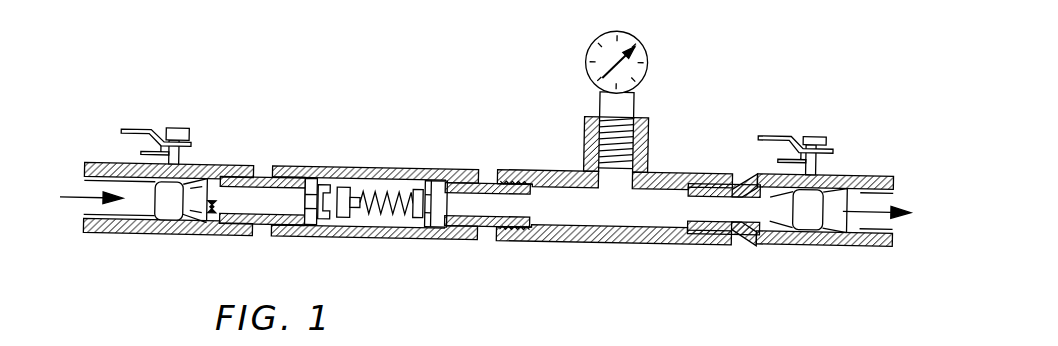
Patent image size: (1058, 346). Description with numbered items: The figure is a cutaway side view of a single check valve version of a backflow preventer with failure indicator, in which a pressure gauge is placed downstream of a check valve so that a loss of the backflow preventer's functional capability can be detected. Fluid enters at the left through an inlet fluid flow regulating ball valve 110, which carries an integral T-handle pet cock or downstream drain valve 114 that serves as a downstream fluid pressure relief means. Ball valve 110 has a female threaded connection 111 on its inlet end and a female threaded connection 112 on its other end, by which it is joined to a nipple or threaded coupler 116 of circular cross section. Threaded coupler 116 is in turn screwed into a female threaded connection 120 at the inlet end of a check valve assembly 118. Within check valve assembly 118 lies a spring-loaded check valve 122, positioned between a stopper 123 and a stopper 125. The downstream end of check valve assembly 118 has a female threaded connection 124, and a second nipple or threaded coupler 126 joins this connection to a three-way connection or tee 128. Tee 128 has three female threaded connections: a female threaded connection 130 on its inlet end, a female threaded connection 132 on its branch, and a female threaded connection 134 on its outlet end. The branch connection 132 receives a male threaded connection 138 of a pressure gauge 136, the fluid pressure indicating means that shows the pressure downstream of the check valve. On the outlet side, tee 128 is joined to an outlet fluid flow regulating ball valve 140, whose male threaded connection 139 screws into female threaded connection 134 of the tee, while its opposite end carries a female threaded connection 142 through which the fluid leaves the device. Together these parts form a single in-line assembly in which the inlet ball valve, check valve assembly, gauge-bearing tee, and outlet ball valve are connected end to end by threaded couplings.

The ball valve 110 is at (157, 235).
The female threaded connection 111 is at (102, 163).
The female threaded connection 112 is at (229, 175).
The downstream drain valve 114 is at (210, 208).
The threaded coupler 116 is at (283, 195).
The check valve assembly 118 is at (355, 166).
The female threaded connection 120 is at (278, 175).
The spring-loaded check valve 122 is at (351, 222).
The stopper 123 is at (327, 180).
The female threaded connection 124 is at (477, 170).
The stopper 125 is at (436, 176).
The threaded coupler 126 is at (437, 225).
The tee 128 is at (614, 234).
The female threaded connection 130 is at (519, 238).
The female threaded connection 132 is at (584, 145).
The female threaded connection 134 is at (711, 183).
The pressure gauge 136 is at (648, 60).
The male threaded connection 138 is at (641, 117).
The male threaded connection 139 is at (741, 234).
The ball valve 140 is at (808, 236).
The female threaded connection 142 is at (877, 174).